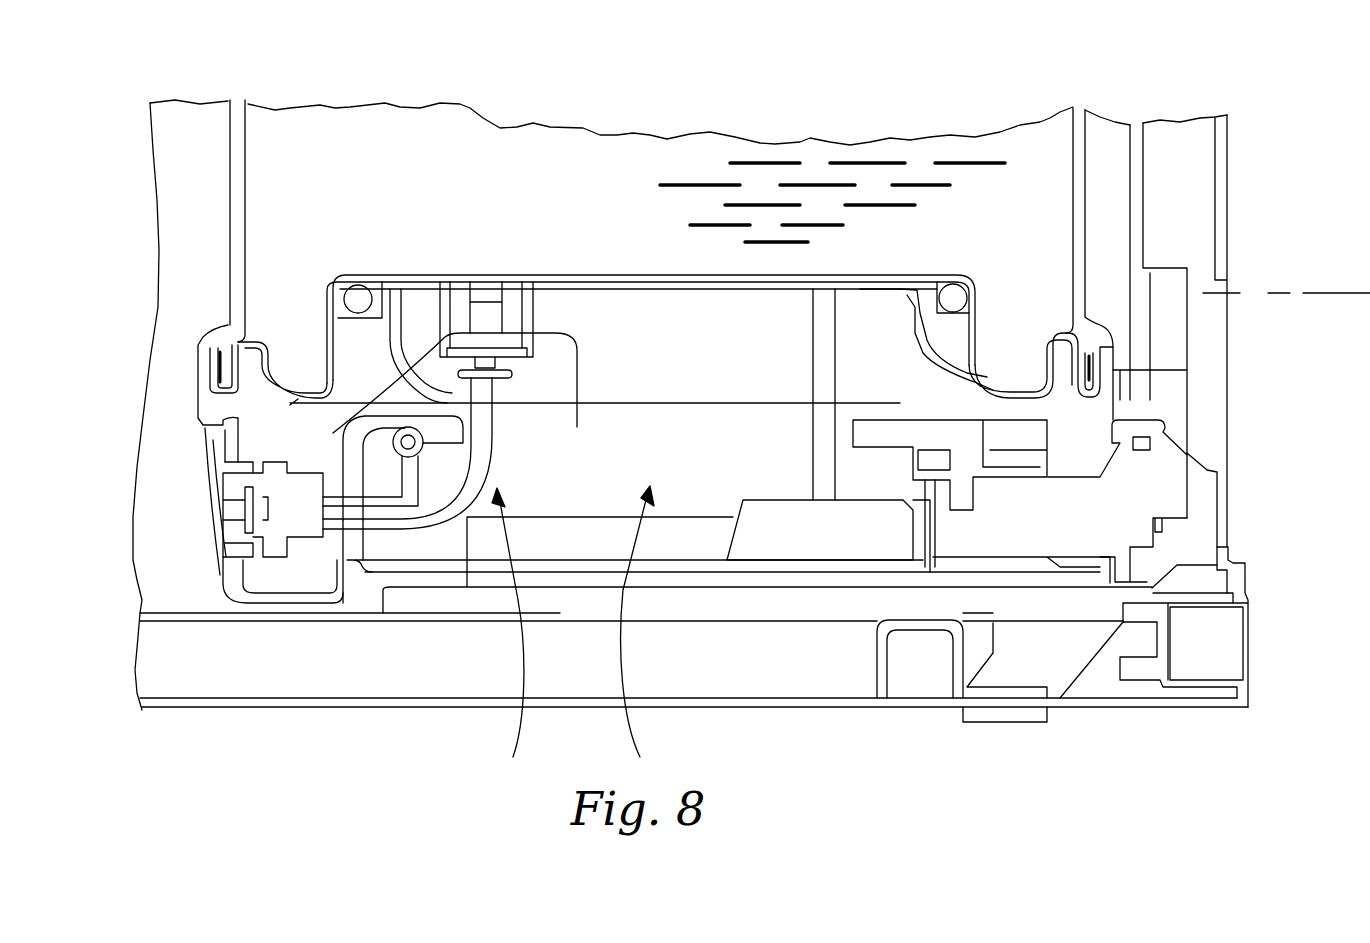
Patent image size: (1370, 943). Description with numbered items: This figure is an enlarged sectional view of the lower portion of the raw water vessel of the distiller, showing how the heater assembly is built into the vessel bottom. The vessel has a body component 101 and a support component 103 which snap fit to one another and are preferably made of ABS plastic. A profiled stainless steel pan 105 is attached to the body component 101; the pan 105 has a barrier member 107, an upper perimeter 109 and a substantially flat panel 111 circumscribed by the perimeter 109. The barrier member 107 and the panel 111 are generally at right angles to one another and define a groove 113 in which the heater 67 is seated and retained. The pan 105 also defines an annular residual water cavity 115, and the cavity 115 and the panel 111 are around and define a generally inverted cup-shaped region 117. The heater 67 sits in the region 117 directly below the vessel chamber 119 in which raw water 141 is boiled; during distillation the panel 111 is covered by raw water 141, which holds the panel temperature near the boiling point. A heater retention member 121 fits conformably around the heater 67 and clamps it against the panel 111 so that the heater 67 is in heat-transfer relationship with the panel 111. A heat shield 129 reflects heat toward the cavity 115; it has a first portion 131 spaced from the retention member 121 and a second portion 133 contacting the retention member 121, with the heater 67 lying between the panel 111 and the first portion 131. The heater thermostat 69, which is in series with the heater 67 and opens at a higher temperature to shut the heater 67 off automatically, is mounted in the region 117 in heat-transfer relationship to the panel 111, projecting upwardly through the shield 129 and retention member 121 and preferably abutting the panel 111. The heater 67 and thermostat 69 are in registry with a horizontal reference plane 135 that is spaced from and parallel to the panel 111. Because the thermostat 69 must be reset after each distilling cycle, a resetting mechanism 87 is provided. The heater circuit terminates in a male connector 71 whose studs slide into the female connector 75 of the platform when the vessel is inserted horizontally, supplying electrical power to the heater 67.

The heater 67 is at (957, 293).
The heater thermostat 69 is at (490, 318).
The male connector 71 is at (897, 440).
The female connector 75 is at (1117, 507).
The mechanism for resetting the thermostat 87 is at (423, 574).
The body component 101 is at (237, 130).
The support component 103 is at (237, 580).
The pan 105 is at (240, 368).
The barrier member 107 is at (337, 325).
The upper perimeter 109 is at (350, 275).
The panel 111 is at (430, 278).
The groove 113 is at (373, 282).
The residual water cavity 115 is at (292, 355).
The inverted cup-shaped region 117 is at (654, 628).
The vessel chamber 119 is at (577, 177).
The heater retention member 121 is at (920, 295).
The heat shield 129 is at (240, 470).
The first portion 131 is at (927, 357).
The second portion 133 is at (713, 289).
The horizontal reference plane 135 is at (1302, 291).
The raw water 141 is at (690, 183).